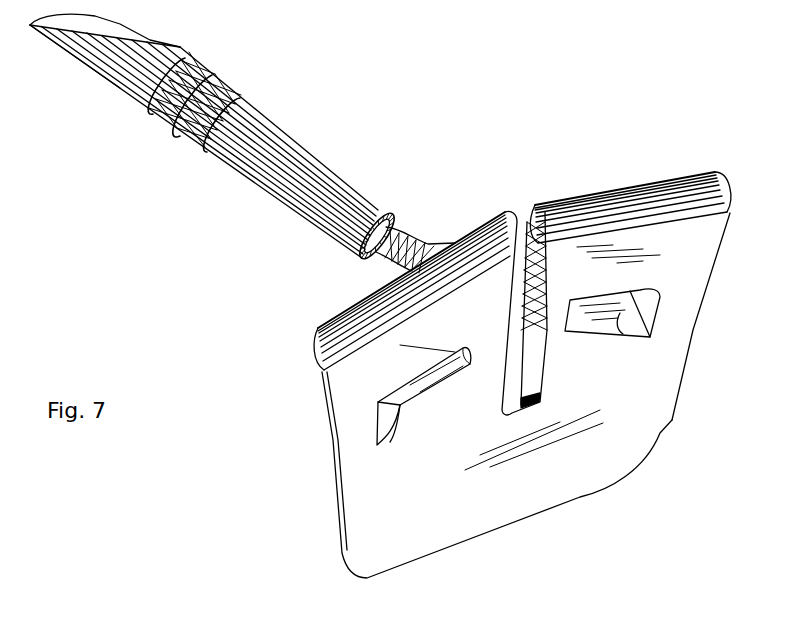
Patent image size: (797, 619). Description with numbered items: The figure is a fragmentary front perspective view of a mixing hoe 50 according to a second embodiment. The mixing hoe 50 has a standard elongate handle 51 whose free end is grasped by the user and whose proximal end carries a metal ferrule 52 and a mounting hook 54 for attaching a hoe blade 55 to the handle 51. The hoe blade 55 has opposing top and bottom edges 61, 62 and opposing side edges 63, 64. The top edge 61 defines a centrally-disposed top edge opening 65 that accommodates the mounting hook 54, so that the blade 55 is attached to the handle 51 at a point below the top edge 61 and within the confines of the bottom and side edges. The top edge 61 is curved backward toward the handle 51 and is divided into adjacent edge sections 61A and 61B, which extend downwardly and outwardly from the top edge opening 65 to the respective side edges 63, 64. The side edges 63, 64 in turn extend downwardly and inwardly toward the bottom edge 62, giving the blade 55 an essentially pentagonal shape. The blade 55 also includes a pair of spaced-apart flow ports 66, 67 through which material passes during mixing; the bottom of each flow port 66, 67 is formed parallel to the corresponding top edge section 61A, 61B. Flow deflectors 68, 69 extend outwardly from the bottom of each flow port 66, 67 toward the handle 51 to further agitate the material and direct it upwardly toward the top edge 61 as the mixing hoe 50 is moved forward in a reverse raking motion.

The mixing hoe 50 is at (188, 280).
The elongate handle 51 is at (128, 77).
The metal ferrule 52 is at (330, 165).
The mounting hook 54 is at (427, 230).
The hoe blade 55 is at (640, 392).
The top edge 61 is at (683, 173).
The top edge section 61A is at (350, 308).
The top edge section 61B is at (637, 184).
The bottom edge 62 is at (600, 490).
The side edge 63 is at (327, 463).
The side edge 64 is at (693, 325).
The top edge opening 65 is at (530, 202).
The flow port 66 is at (377, 403).
The flow port 67 is at (660, 297).
The flow deflector 68 is at (398, 412).
The flow deflector 69 is at (622, 320).